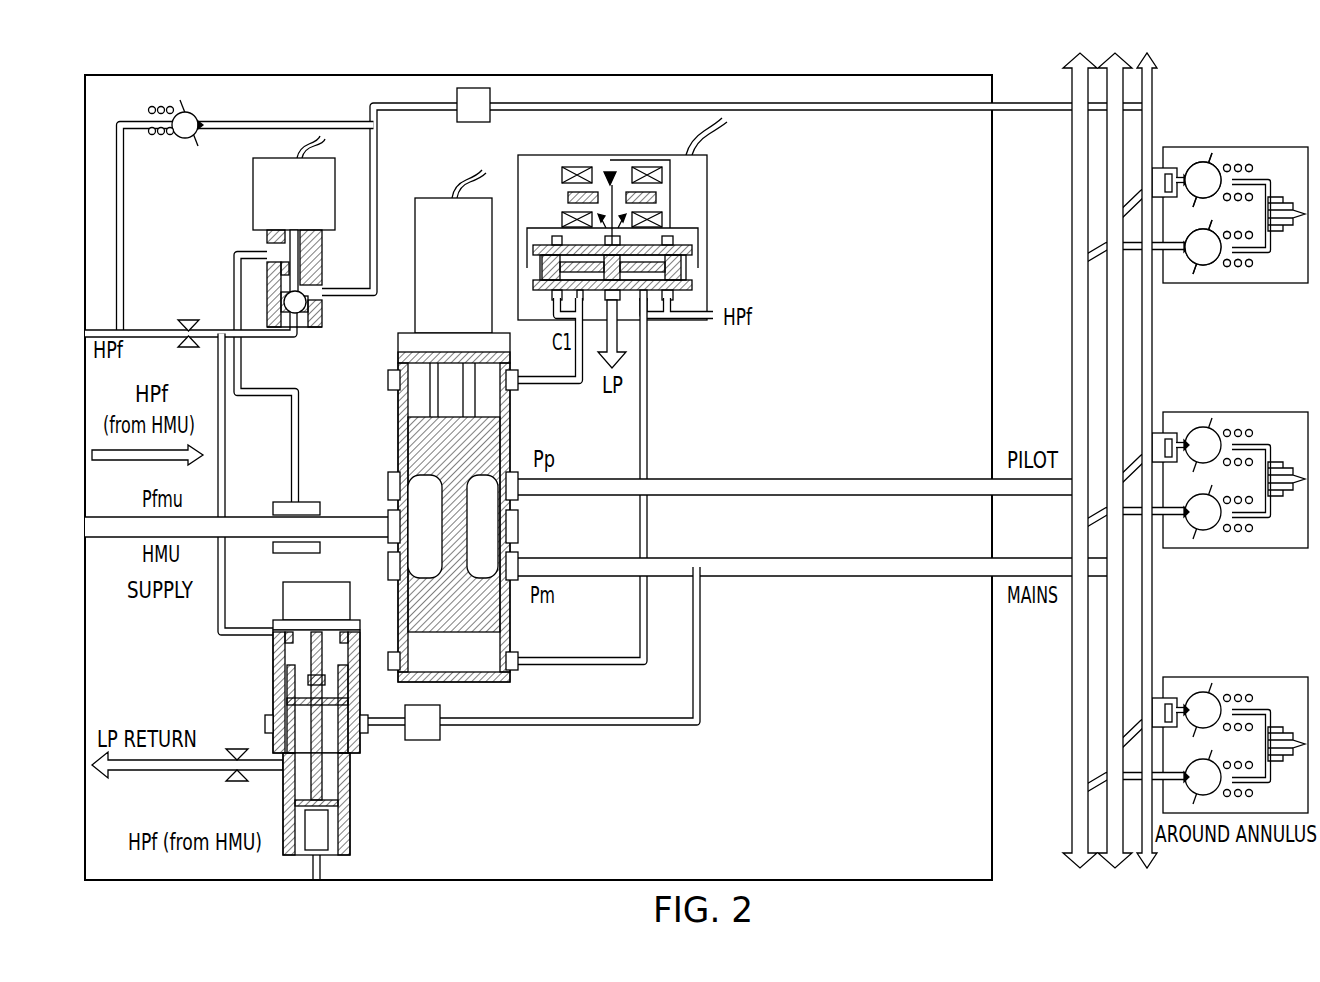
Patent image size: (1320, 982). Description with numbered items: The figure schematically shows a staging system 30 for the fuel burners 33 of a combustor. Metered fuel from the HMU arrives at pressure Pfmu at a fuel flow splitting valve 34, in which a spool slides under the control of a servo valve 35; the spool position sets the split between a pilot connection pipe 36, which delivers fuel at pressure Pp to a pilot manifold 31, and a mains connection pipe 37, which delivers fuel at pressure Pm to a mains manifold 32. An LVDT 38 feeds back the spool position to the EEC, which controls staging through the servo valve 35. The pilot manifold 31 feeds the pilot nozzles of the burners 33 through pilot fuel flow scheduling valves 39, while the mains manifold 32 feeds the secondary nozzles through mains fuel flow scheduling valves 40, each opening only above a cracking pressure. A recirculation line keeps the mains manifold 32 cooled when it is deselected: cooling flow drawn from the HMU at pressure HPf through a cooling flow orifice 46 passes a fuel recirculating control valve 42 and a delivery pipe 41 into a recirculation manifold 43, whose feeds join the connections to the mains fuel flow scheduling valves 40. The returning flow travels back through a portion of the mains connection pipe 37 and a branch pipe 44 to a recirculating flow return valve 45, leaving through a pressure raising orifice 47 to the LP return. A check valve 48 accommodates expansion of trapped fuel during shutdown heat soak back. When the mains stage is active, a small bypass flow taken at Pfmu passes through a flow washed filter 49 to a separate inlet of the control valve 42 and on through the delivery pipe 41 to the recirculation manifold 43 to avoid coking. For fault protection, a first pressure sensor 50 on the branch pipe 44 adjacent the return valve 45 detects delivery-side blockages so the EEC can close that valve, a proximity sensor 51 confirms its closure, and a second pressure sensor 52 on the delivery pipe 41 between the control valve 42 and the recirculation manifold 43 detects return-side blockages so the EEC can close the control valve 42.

The staging system 30 is at (630, 70).
The pilot manifold 31 is at (1070, 305).
The mains manifold 32 is at (1125, 362).
The fuel burners 33 is at (1194, 201).
The fuel flow splitting valve 34 is at (386, 438).
The servo valve 35 is at (707, 225).
The pilot connection pipe 36 is at (904, 479).
The mains connection pipe 37 is at (893, 581).
The LVDT 38 is at (438, 282).
The pilot fuel flow scheduling valves 39 is at (1193, 266).
The mains fuel flow scheduling valves 40 is at (1198, 158).
The delivery pipe 41 is at (904, 110).
The fuel recirculating control valve 42 is at (279, 210).
The recirculation manifold 43 is at (1152, 612).
The branch pipe 44 is at (612, 728).
The recirculating flow return valve 45 is at (375, 806).
The cooling flow orifice 46 is at (190, 318).
The pressure raising orifice 47 is at (238, 748).
The check valve 48 is at (196, 141).
The flow washed filter 49 is at (292, 556).
The first pressure sensor 50 is at (428, 742).
The proximity sensor 51 is at (302, 614).
The second pressure sensor 52 is at (468, 88).